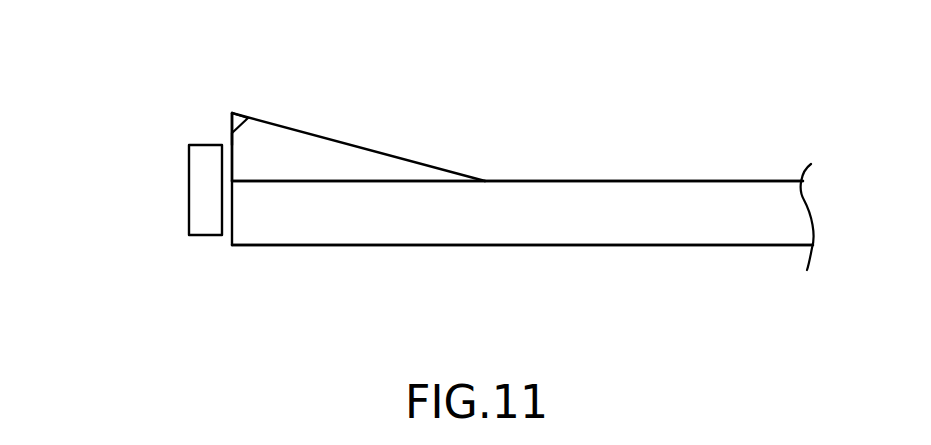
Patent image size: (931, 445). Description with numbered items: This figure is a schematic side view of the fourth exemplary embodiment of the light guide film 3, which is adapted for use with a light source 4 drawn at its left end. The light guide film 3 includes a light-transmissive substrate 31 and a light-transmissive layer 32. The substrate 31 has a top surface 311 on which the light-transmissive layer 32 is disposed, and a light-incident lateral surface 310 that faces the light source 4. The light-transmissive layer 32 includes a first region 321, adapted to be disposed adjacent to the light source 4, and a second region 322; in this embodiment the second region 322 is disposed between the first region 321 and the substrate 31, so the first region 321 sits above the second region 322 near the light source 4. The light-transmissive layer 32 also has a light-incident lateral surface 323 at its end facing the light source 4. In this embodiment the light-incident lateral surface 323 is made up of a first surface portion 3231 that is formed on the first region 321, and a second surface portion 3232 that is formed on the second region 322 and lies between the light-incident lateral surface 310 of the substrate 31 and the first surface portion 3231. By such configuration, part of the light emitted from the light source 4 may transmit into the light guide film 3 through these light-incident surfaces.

The light guide film 3 is at (753, 158).
The light-transmissive substrate 31 is at (653, 220).
The top surface 311 is at (658, 181).
The light-incident lateral surface 310 is at (233, 233).
The light-transmissive layer 32 is at (377, 124).
The first region 321 is at (237, 122).
The second region 322 is at (360, 172).
The light-incident lateral surface 323 is at (123, 53).
The first surface portion 3231 is at (232, 125).
The second surface portion 3232 is at (232, 137).
The light source 4 is at (197, 177).